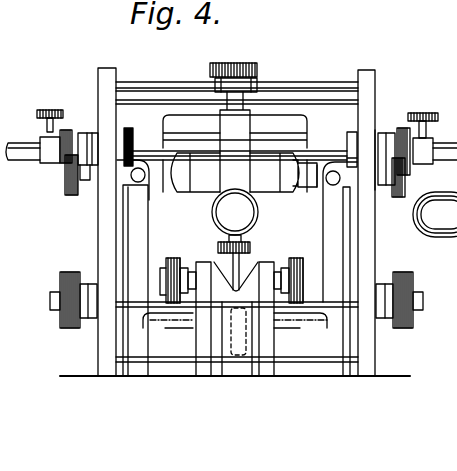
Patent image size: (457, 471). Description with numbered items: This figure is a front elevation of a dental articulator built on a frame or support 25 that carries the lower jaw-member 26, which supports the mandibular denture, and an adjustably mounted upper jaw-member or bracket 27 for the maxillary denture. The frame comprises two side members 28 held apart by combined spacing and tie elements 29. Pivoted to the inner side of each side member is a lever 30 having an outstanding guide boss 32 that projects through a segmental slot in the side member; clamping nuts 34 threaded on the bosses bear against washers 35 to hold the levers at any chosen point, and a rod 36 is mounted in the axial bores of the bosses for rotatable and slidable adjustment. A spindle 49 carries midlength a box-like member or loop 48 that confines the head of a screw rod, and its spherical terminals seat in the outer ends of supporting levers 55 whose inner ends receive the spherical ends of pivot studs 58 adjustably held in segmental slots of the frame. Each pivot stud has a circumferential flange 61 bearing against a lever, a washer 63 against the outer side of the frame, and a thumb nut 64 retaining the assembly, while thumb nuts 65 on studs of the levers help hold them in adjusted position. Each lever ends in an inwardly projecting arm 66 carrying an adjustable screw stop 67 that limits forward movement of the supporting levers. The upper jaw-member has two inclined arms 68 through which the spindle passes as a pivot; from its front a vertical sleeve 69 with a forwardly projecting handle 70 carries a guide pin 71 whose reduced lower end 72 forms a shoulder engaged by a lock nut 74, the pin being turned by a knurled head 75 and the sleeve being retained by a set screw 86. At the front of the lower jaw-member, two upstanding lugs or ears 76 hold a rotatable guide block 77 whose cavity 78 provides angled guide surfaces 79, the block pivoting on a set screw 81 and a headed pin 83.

The frame or support 25 is at (377, 247).
The lower jaw-member 26 is at (293, 317).
The upper jaw-member or bracket 27 is at (278, 190).
The side members 28 is at (105, 80).
The combined spacing and tie elements 29 is at (297, 87).
The lever 30 is at (127, 135).
The guide boss 32 is at (50, 165).
The clamping nuts 34 is at (62, 127).
The washers 35 is at (95, 133).
The rod 36 is at (147, 143).
The box-like member or loop 48 is at (208, 195).
The spindle 49 is at (320, 186).
The supporting levers 55 is at (140, 245).
The pivot studs 58 is at (52, 303).
The circumferential flange 61 is at (126, 290).
The washer 63 is at (96, 320).
The thumb nut 64 is at (65, 276).
The thumb nuts 65 is at (70, 196).
The inwardly projecting arm 66 is at (125, 170).
The adjustable screw stop 67 is at (147, 183).
The arms 68 is at (173, 158).
The sleeve 69 is at (235, 142).
The handle 70 is at (235, 212).
The guide pin 71 is at (232, 260).
The reduced lower end 72 is at (243, 262).
The lock nut 74 is at (249, 252).
The knurled head 75 is at (247, 58).
The lugs or ears 76 is at (182, 310).
The guide block 77 is at (203, 290).
The cavity 78 is at (211, 277).
The guide surfaces 79 is at (222, 320).
The set screw 81 is at (170, 305).
The headed pin 83 is at (303, 278).
The set screw 86 is at (257, 82).